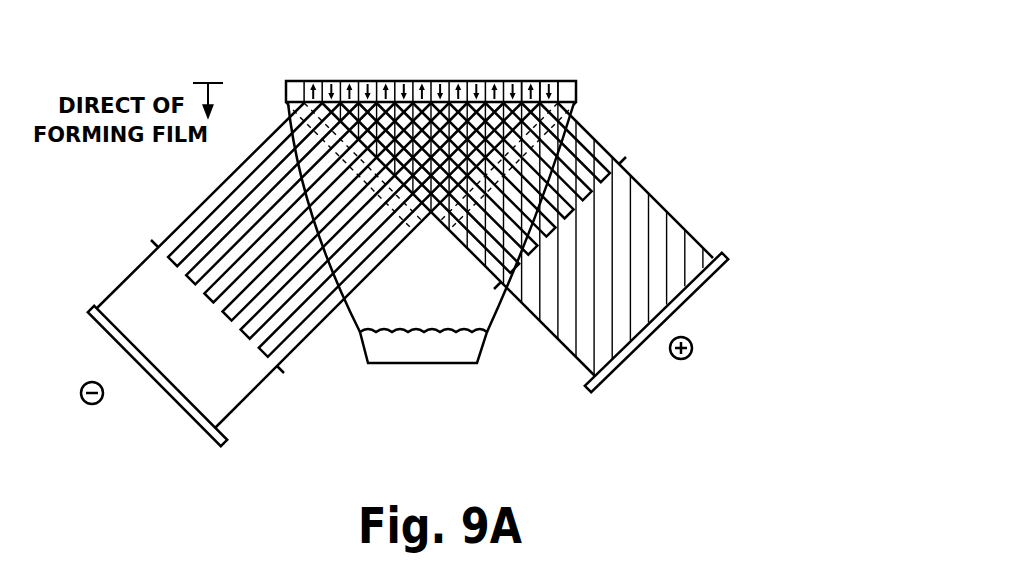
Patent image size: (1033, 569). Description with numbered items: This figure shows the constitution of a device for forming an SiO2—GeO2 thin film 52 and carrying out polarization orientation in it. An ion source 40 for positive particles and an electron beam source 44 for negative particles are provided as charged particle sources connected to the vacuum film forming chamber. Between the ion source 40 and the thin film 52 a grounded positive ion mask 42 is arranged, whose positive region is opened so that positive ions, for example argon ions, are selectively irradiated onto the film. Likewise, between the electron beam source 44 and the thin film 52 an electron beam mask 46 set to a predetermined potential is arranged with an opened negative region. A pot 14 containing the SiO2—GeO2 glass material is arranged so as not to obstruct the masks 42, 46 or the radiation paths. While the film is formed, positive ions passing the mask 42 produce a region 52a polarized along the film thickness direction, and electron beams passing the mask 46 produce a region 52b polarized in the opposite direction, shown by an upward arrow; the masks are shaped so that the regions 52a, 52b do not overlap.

The SiO2—GeO2 thin film 52 is at (465, 67).
The positive ion irradiation region 52a is at (550, 81).
The electron beam irradiation region 52b is at (528, 81).
The positive ion mask 42 is at (617, 166).
The ion source 40 is at (658, 322).
The electron beam source 44 is at (137, 376).
The electron beam mask 46 is at (283, 372).
The pot 14 is at (398, 364).